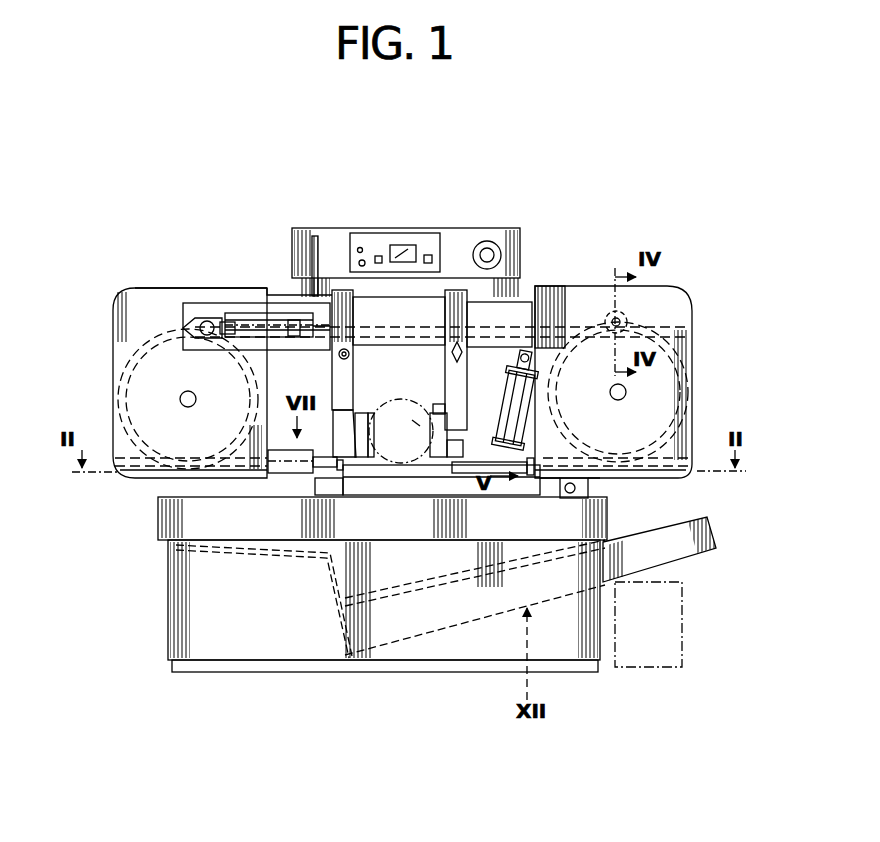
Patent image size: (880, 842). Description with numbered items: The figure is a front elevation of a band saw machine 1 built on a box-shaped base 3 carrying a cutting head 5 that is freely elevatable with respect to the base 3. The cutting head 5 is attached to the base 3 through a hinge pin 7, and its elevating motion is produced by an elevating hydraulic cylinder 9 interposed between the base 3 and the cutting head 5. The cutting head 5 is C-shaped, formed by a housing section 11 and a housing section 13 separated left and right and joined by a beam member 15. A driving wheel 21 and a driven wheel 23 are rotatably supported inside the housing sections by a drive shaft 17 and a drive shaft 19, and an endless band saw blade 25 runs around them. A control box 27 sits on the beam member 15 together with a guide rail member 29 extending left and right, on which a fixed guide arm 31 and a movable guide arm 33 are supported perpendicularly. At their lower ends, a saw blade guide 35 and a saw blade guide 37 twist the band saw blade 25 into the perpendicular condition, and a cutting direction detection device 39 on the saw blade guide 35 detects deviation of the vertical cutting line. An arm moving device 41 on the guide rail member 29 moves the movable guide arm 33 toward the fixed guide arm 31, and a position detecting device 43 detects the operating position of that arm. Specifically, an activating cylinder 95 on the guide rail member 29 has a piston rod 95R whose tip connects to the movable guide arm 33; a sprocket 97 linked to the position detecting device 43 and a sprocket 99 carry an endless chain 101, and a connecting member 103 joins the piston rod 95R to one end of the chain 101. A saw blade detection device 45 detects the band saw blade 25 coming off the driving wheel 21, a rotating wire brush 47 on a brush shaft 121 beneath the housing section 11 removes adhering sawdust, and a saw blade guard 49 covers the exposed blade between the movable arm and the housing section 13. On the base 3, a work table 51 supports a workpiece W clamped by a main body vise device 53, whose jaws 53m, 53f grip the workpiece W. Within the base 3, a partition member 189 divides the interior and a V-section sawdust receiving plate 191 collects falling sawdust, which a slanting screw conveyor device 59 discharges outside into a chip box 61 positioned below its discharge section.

The band saw machine 1 is at (548, 212).
The base 3 is at (180, 634).
The cutting head 5 is at (580, 284).
The hinge pin 7 is at (590, 488).
The elevating hydraulic cylinder 9 is at (523, 409).
The housing section 11 is at (684, 456).
The housing section 13 is at (134, 474).
The beam member 15 is at (518, 298).
The drive shaft 17 is at (626, 396).
The drive shaft 19 is at (178, 401).
The driving wheel 21 is at (686, 380).
The driven wheel 23 is at (128, 363).
The band saw blade 25 is at (390, 478).
The control box 27 is at (446, 242).
The guide rail member 29 is at (528, 314).
The fixed guide arm 31 is at (457, 296).
The movable guide arm 33 is at (345, 292).
The saw blade guide 35 is at (458, 458).
The saw blade guide 37 is at (352, 470).
The cutting direction detection device 39 is at (418, 420).
The arm moving device 41 is at (240, 294).
The position detecting device 43 is at (205, 318).
The saw blade detection device 45 is at (640, 320).
The rotating wire brush 47 is at (532, 476).
The saw blade guard 49 is at (295, 476).
The work table 51 is at (420, 499).
The main body vise device 53 is at (346, 406).
The movable vise jaw 53m is at (363, 424).
The fixed vise jaw 53f is at (443, 412).
The screw conveyor device 59 is at (688, 560).
The chip box 61 is at (686, 638).
The activating cylinder 95 is at (258, 316).
The piston rod 95R is at (313, 268).
The sprocket 97 is at (206, 336).
The sprocket 99 is at (293, 340).
The chain 101 is at (244, 338).
The connecting member 103 is at (292, 312).
The brush shaft 121 is at (572, 492).
The partition member 189 is at (336, 596).
The sawdust receiving plate 191 is at (430, 592).
The workpiece W is at (422, 414).